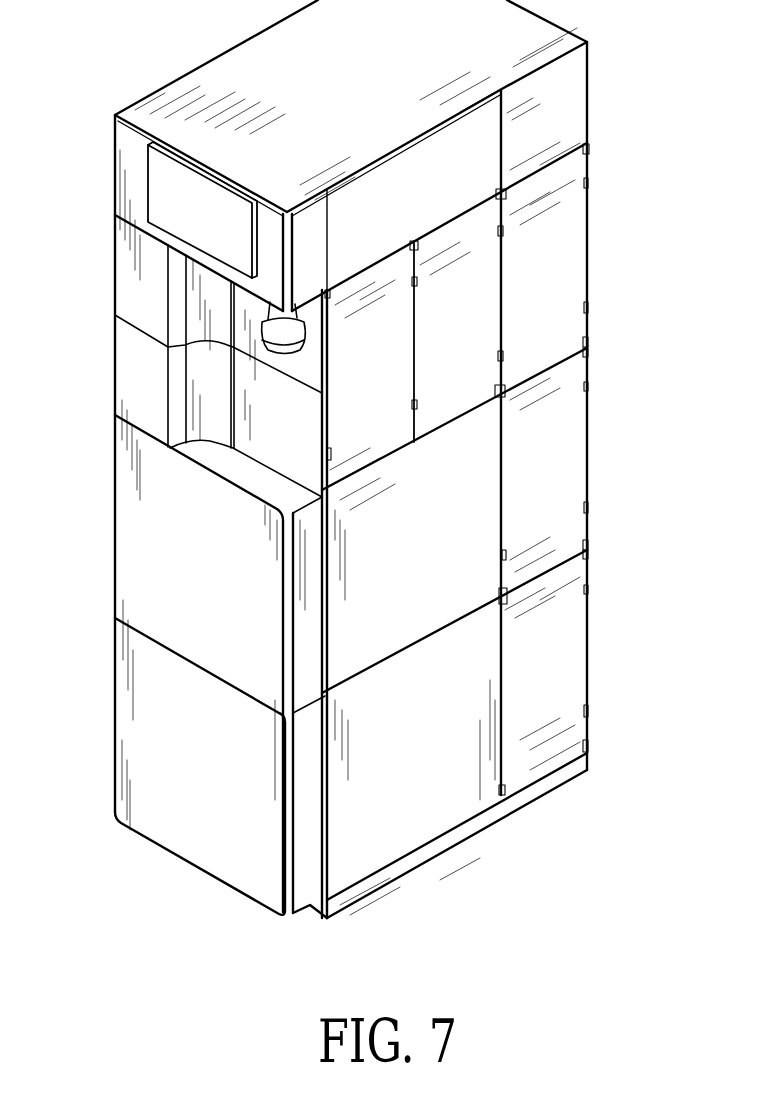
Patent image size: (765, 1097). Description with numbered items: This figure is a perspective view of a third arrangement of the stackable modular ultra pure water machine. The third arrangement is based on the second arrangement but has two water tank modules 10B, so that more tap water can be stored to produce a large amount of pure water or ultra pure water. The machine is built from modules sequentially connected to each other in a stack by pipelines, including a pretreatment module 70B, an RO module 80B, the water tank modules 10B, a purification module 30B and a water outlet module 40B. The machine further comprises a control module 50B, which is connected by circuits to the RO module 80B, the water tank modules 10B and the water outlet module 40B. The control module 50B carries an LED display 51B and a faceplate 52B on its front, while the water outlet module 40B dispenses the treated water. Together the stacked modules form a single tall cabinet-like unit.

The water tank module 10B is at (488, 743).
The purification module 30B is at (572, 620).
The water outlet module 40B is at (305, 335).
The control module 50B is at (252, 62).
The LED display 51B is at (160, 180).
The faceplate 52B is at (128, 552).
The pretreatment module 70B is at (572, 247).
The RO module 80B is at (483, 243).